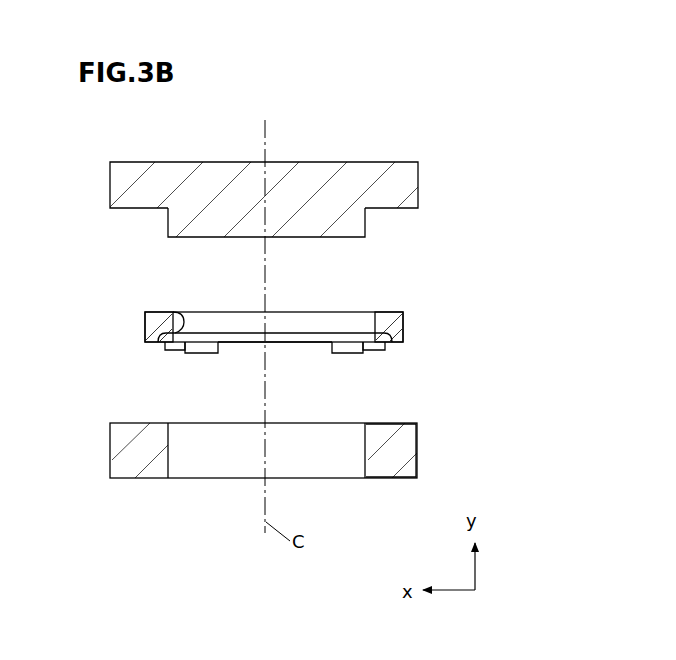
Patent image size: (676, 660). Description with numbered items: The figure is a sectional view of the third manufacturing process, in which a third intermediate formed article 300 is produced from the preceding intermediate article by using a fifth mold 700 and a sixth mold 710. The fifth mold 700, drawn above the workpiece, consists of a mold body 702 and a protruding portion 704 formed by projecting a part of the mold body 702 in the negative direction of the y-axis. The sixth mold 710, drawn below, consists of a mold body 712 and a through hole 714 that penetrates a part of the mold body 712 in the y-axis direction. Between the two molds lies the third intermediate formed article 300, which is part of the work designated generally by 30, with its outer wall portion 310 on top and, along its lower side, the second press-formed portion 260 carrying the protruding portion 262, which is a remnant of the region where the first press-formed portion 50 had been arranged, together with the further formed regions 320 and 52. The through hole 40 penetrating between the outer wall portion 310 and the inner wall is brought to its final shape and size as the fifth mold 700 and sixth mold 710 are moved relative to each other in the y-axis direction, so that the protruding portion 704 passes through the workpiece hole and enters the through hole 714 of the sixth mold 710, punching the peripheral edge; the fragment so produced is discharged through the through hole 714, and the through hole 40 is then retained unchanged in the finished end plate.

The fifth mold 700 is at (410, 122).
The mold body 702 is at (357, 163).
The protruding portion 704 is at (229, 238).
The sixth mold 710 is at (437, 453).
The mold body 712 is at (404, 471).
The through hole 714 is at (360, 463).
The electro-optical device 30 is at (135, 331).
The third intermediate formed article 300 is at (418, 315).
The outer wall portion 310 is at (288, 310).
The through hole 40 is at (184, 312).
The second press-formed portion 260 is at (160, 348).
The protruding portion 262 is at (373, 347).
The protruding portion 320 is at (228, 348).
The first press-formed portion 50 is at (247, 348).
The protruding portion 52 is at (319, 345).